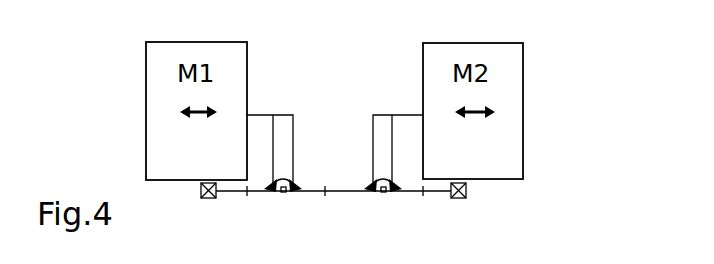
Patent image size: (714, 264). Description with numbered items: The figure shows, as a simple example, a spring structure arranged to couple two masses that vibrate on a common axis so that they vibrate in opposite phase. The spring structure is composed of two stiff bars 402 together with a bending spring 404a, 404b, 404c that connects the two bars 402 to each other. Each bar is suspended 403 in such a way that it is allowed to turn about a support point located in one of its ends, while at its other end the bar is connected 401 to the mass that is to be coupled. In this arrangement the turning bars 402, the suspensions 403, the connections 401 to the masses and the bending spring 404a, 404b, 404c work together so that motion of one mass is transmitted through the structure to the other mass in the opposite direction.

The connection to the masses 401 is at (403, 115).
The stiff bar 402 is at (373, 150).
The suspension 403 is at (202, 198).
The bending spring 404a is at (248, 193).
The bending spring 404b is at (325, 193).
The bending spring 404c is at (423, 193).